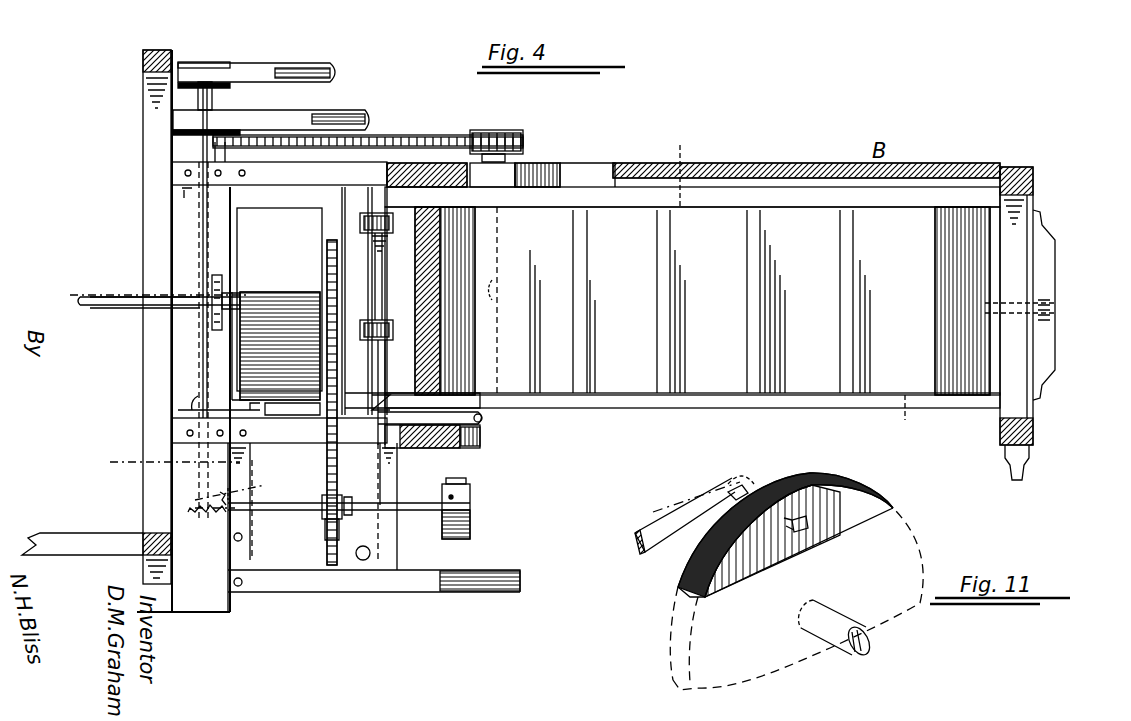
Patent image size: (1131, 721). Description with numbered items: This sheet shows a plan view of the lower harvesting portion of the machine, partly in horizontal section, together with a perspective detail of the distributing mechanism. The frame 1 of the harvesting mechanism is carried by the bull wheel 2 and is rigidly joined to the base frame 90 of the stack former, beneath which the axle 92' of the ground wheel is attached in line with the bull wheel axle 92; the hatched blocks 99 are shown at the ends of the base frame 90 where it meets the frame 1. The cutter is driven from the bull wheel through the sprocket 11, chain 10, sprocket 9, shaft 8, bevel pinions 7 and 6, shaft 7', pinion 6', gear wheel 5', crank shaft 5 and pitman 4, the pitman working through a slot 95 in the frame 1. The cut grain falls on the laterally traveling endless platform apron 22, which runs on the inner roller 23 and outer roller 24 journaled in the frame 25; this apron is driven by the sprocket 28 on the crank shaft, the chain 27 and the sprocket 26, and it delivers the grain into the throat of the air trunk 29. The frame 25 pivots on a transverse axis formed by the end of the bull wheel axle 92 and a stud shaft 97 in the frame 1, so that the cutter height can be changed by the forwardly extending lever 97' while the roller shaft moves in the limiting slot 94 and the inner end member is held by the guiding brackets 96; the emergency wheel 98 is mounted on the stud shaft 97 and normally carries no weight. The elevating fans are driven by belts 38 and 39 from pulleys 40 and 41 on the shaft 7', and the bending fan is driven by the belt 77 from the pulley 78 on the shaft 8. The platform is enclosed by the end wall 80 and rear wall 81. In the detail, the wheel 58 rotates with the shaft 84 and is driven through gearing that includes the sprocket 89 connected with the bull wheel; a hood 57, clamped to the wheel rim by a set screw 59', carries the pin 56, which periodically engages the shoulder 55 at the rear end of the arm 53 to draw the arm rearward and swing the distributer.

In FIG. 4, the frame of the harvesting mechanism 1 is at (595, 172).
In FIG. 4, the bull wheel 2 is at (312, 301).
In FIG. 4, the pitman 4 is at (485, 420).
In FIG. 4, the crank shaft 5 is at (209, 346).
In FIG. 4, the gear wheel 5' is at (285, 439).
In FIG. 4, the bevel pinion 6 is at (207, 525).
In FIG. 4, the pinion 6' is at (176, 412).
In FIG. 4, the bevel pinion 7 is at (237, 493).
In FIG. 4, the shaft 7' is at (165, 465).
In FIG. 4, the shaft 8 is at (288, 512).
In FIG. 4, the sprocket 9 is at (332, 520).
In FIG. 4, the chain 10 is at (337, 468).
In FIG. 4, the sprocket 11 is at (327, 245).
In FIG. 4, the endless platform apron 22 is at (692, 301).
In FIG. 4, the inner roller 23 is at (505, 284).
In FIG. 4, the roller 24 is at (950, 252).
In FIG. 4, the frame 25 is at (895, 427).
In FIG. 4, the sprocket 26 is at (500, 130).
In FIG. 4, the chain 27 is at (430, 135).
In FIG. 4, the sprocket 28 is at (215, 142).
In FIG. 4, the air trunk 29 is at (418, 321).
In FIG. 4, the belt 38 is at (258, 73).
In FIG. 4, the belt 39 is at (292, 116).
In FIG. 4, the pulley 40 is at (215, 62).
In FIG. 4, the pulley 41 is at (240, 112).
In FIG. 11, the arm 53 is at (690, 504).
In FIG. 11, the shoulder or hook 55 is at (750, 490).
In FIG. 11, the pin 56 is at (733, 484).
In FIG. 11, the hood 57 is at (805, 475).
In FIG. 11, the wheel 58 is at (672, 624).
In FIG. 11, the set screw 59' is at (833, 543).
In FIG. 4, the belt 77 is at (466, 481).
In FIG. 4, the pulley 78 is at (470, 506).
In FIG. 4, the end wall 80 is at (1033, 196).
In FIG. 4, the rear wall 81 is at (748, 163).
In FIG. 11, the shaft 84 is at (838, 618).
In FIG. 4, the sprocket 89 is at (222, 291).
In FIG. 4, the base frame of the stack former 90 is at (143, 210).
In FIG. 4, the bull wheel axle 92 is at (160, 324).
In FIG. 4, the axle 92' is at (145, 284).
In FIG. 4, the limiting slot or guide 94 is at (525, 170).
In FIG. 4, the slot 95 is at (385, 400).
In FIG. 4, the guiding brackets 96 is at (386, 320).
In FIG. 4, the stud shaft 97 is at (1040, 314).
In FIG. 4, the lever 97' is at (432, 452).
In FIG. 4, the emergency wheel 98 is at (1045, 283).
In FIG. 4, the cap 99 is at (158, 50).